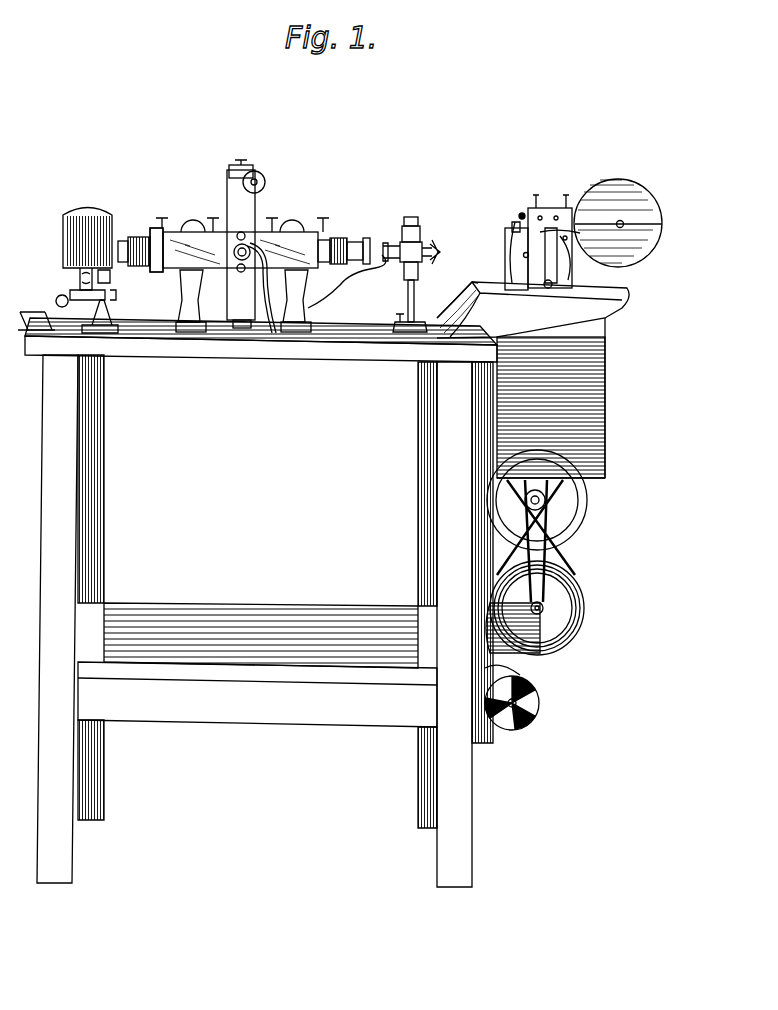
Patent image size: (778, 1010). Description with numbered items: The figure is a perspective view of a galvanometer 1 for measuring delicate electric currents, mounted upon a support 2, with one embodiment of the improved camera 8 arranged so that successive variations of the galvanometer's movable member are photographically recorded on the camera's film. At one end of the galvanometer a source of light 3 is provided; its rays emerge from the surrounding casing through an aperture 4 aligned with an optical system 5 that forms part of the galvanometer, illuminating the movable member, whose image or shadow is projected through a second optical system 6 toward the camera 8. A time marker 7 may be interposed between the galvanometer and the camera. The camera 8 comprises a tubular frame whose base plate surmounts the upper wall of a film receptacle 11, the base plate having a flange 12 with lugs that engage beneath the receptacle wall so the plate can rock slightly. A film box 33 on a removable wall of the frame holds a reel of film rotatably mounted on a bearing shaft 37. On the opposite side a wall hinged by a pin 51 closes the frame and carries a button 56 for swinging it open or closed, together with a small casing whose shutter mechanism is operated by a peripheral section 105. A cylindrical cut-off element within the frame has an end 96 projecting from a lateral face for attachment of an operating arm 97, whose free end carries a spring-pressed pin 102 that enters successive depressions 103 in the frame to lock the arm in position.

The galvanometer 1 is at (300, 240).
The support 2 is at (337, 356).
The source of light 3 is at (75, 238).
The aperture 4 is at (115, 240).
The optical system 5 is at (127, 254).
The optical system 6 is at (351, 247).
The time marker 7 is at (411, 222).
The camera 8 is at (547, 207).
The film receptacle 11 is at (590, 362).
The flange 12 is at (628, 305).
The film box 33 is at (652, 212).
The bearing shaft 37 is at (623, 221).
The pin 51 is at (512, 283).
The button 56 is at (521, 214).
The end 96 is at (550, 286).
The operating handle or arm 97 is at (540, 245).
The pin 102 is at (550, 229).
The depressions 103 is at (562, 240).
The peripheral section 105 is at (517, 229).